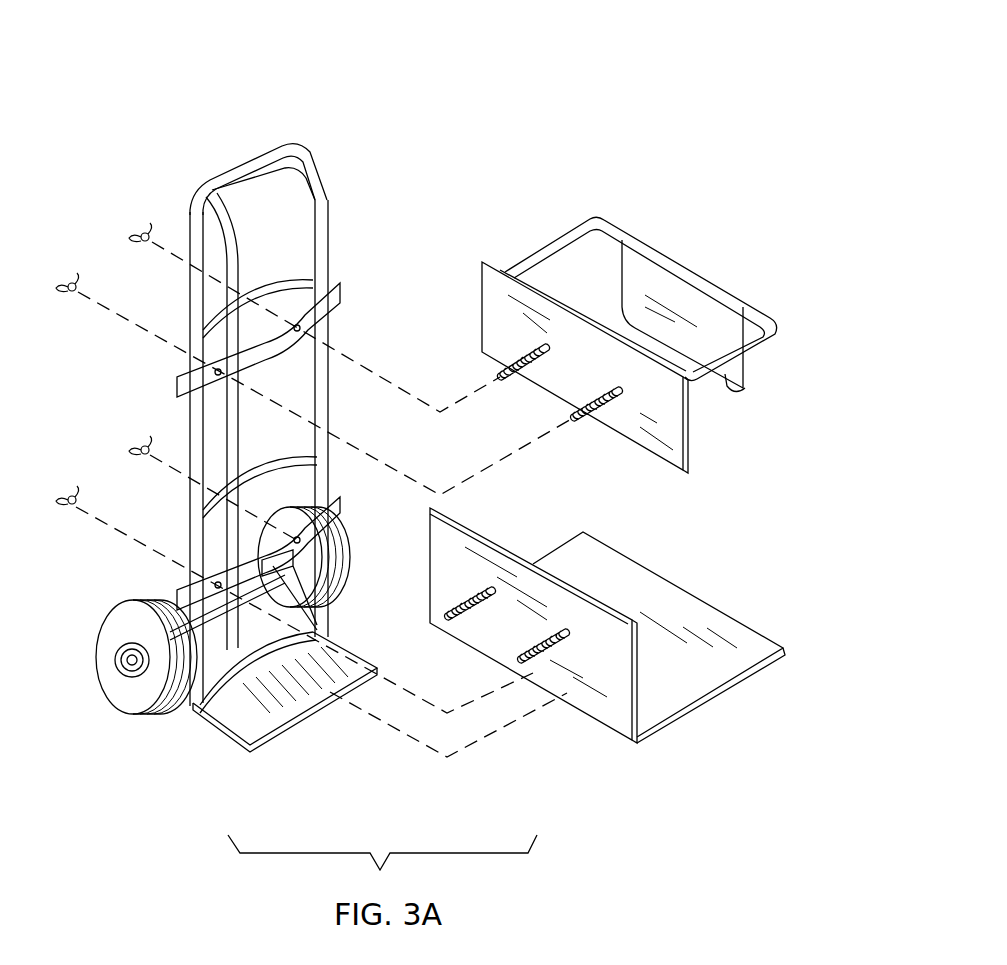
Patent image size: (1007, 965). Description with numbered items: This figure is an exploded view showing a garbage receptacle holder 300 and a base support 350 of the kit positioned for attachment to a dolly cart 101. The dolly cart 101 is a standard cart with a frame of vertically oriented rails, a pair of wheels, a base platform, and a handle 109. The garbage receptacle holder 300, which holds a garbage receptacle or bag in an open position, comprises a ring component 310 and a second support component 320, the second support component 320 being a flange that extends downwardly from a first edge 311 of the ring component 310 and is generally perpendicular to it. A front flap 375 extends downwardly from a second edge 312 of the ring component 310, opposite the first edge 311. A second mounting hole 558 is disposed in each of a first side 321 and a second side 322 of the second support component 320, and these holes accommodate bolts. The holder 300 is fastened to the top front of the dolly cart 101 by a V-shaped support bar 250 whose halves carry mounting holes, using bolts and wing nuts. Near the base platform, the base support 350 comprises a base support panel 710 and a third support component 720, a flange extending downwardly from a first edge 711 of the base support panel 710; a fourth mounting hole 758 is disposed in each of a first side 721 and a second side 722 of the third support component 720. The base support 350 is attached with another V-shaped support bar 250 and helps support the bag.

The dolly cart 101 is at (197, 413).
The handle 109 is at (233, 170).
The V-shaped support bar 250 is at (317, 307).
The garbage receptacle holder 300 is at (613, 135).
The ring component 310 is at (750, 377).
The first edge 311 is at (563, 313).
The second edge 312 is at (687, 317).
The second support component 320 is at (677, 453).
The first side 321 is at (497, 320).
The second side 322 is at (690, 378).
The base support 350 is at (667, 780).
The front flap 375 is at (653, 403).
The second mounting hole 558 is at (547, 347).
The base support panel 710 is at (667, 683).
The first edge 711 is at (567, 707).
The third support component 720 is at (617, 717).
The first side 721 is at (438, 580).
The second side 722 is at (613, 670).
The fourth mounting hole 758 is at (590, 626).